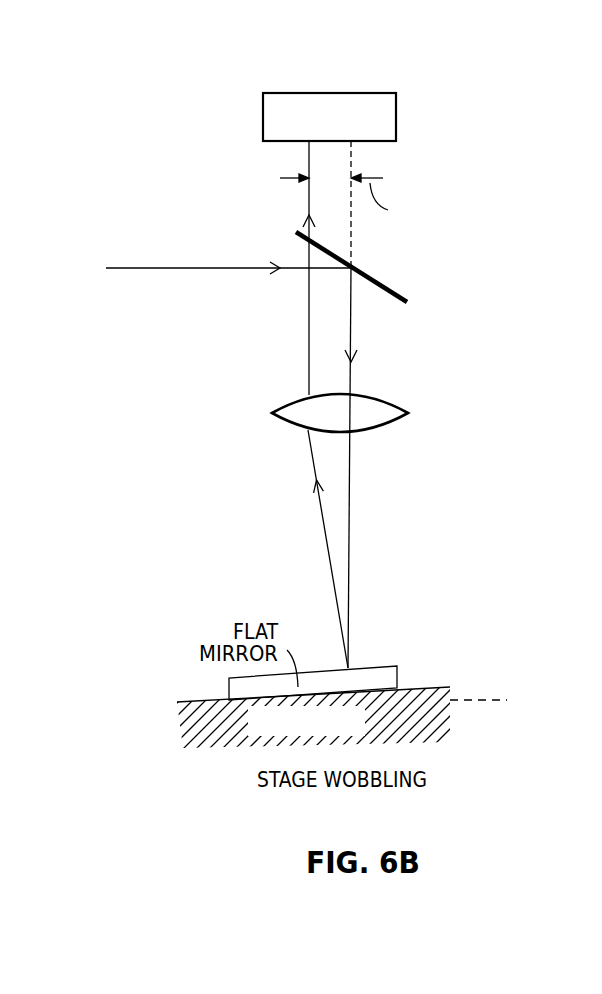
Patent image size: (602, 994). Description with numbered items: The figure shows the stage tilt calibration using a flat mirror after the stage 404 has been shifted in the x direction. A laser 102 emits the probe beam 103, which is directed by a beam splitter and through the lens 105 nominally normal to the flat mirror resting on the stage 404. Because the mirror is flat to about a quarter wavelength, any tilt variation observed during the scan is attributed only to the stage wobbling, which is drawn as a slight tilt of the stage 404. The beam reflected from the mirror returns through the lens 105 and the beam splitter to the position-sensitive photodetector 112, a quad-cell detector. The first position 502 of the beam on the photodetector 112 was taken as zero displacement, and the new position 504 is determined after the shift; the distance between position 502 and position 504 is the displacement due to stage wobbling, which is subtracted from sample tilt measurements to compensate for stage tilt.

The position-sensitive photodetector 112 is at (283, 93).
The position of the beam incident to the photodetector after stage shift 504 is at (309, 143).
The first x position of the beam incident to the photodetector 502 is at (352, 143).
The laser 102 is at (160, 253).
The probe beam 103 is at (258, 268).
The lens 105 is at (384, 398).
The stage 404 is at (360, 732).